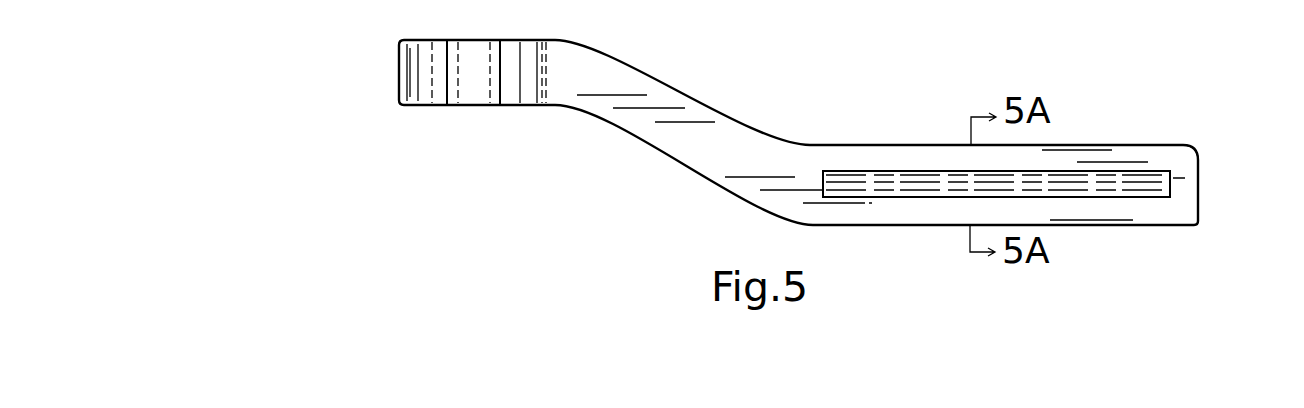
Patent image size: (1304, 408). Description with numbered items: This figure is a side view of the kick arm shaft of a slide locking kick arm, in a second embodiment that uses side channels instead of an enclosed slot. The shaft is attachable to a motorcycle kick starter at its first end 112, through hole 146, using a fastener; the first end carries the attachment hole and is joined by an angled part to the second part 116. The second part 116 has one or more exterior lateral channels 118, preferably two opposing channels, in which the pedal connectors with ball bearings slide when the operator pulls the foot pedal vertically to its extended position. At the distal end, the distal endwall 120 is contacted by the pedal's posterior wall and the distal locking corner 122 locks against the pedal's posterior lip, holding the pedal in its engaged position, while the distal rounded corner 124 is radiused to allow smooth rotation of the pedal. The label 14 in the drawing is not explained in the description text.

The handle arm 14 is at (688, 100).
The first end 112 is at (447, 106).
The hole 146 is at (490, 106).
The second part 116 is at (918, 226).
The exterior lateral channels 118 is at (1103, 187).
The distal endwall 120 is at (1199, 190).
The distal locking corner 122 is at (1195, 228).
The distal rounded corner 124 is at (1193, 143).